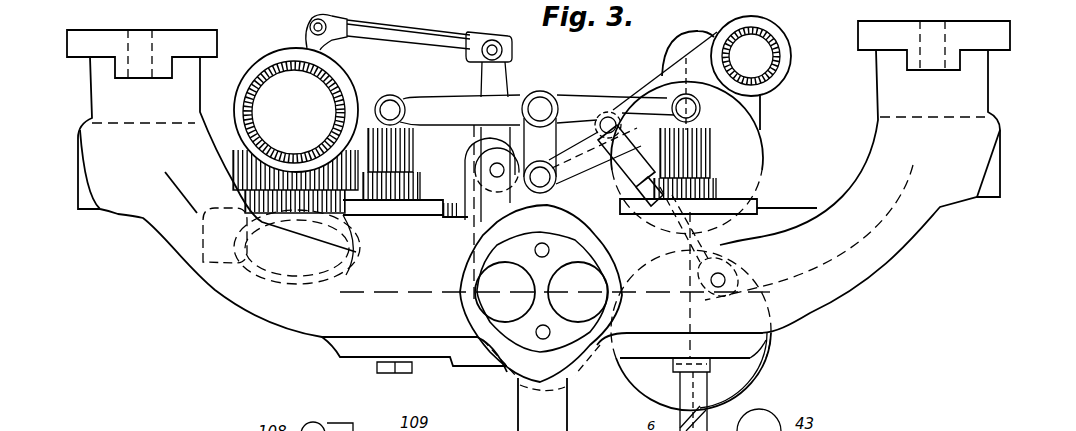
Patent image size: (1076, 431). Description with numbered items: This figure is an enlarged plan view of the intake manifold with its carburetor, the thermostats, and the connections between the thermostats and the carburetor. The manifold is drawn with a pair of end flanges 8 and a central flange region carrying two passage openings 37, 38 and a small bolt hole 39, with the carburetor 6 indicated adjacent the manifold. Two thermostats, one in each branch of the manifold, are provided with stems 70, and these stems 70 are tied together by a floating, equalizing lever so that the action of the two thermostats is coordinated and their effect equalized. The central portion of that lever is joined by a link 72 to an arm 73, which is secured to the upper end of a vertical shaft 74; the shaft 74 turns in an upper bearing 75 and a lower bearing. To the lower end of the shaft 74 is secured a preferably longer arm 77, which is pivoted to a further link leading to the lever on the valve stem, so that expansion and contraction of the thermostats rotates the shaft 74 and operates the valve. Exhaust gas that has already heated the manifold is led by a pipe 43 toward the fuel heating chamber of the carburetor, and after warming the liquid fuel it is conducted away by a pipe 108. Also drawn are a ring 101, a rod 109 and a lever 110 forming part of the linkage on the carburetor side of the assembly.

The flange 8 is at (165, 172).
The carburetor 6 is at (682, 60).
The intake passage opening 37 is at (483, 281).
The intake passage opening 38 is at (592, 280).
The bolt hole 39 is at (542, 243).
The pipe 43 is at (772, 47).
The stem 70 is at (696, 126).
The link 72 is at (556, 166).
The arm 73 is at (518, 205).
The vertical shaft 74 is at (493, 169).
The upper bearing 75 is at (480, 190).
The longer arm 77 is at (578, 127).
The ring 101 is at (334, 90).
The pipe 108 is at (312, 45).
The rod 109 is at (412, 33).
The lever 110 is at (497, 80).